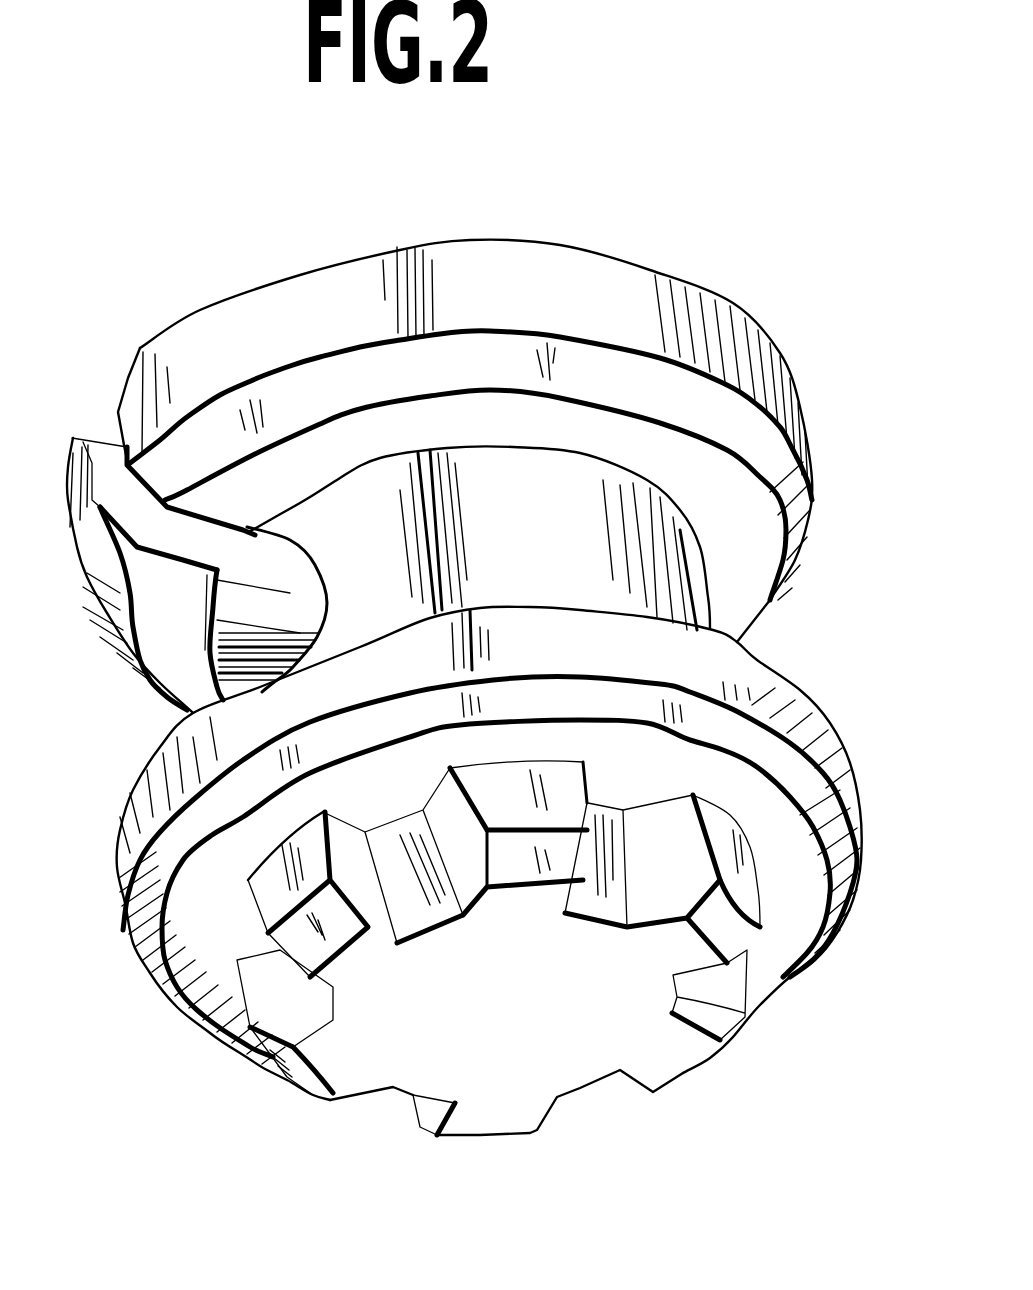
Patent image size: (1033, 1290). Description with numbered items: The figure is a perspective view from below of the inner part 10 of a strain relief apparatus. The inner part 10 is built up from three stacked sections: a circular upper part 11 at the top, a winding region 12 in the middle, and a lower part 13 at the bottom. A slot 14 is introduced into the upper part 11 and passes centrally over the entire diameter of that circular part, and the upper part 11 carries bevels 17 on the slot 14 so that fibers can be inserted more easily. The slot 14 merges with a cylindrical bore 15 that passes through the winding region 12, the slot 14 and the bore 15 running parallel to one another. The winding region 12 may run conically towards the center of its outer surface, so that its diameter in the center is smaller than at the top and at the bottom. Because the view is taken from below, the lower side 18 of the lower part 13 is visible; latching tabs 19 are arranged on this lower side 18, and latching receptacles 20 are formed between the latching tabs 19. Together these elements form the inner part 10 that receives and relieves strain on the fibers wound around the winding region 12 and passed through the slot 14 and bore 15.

The inner part 10 is at (857, 487).
The upper part 11 is at (780, 400).
The winding region 12 is at (740, 620).
The lower part 13 is at (820, 747).
The slot 14 is at (115, 432).
The cylindrical bore 15 is at (240, 625).
The bevels 17 is at (118, 383).
The lower side 18 is at (795, 884).
The latching tabs 19 is at (737, 920).
The latching receptacles 20 is at (743, 1015).